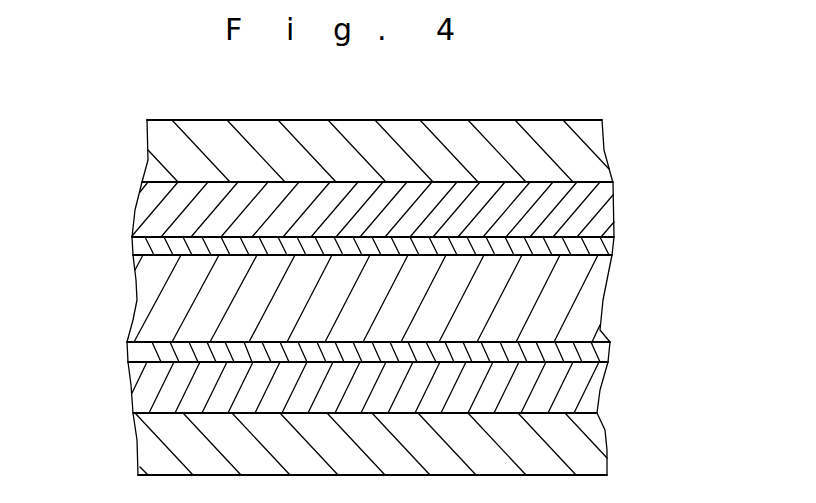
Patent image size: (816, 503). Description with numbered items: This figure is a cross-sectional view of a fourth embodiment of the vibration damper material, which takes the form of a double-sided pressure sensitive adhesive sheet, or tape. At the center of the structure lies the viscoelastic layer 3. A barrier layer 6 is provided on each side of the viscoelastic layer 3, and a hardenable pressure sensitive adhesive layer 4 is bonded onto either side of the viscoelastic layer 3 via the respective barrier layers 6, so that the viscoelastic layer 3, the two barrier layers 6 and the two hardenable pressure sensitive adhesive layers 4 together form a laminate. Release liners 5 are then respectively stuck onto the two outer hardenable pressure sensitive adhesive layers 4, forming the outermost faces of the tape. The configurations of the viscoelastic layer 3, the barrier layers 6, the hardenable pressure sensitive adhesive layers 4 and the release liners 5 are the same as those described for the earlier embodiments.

The viscoelastic layer 3 is at (587, 305).
The hardenable pressure sensitive adhesive layer 4 is at (582, 215).
The release liner 5 is at (580, 160).
The barrier layer 6 is at (602, 252).